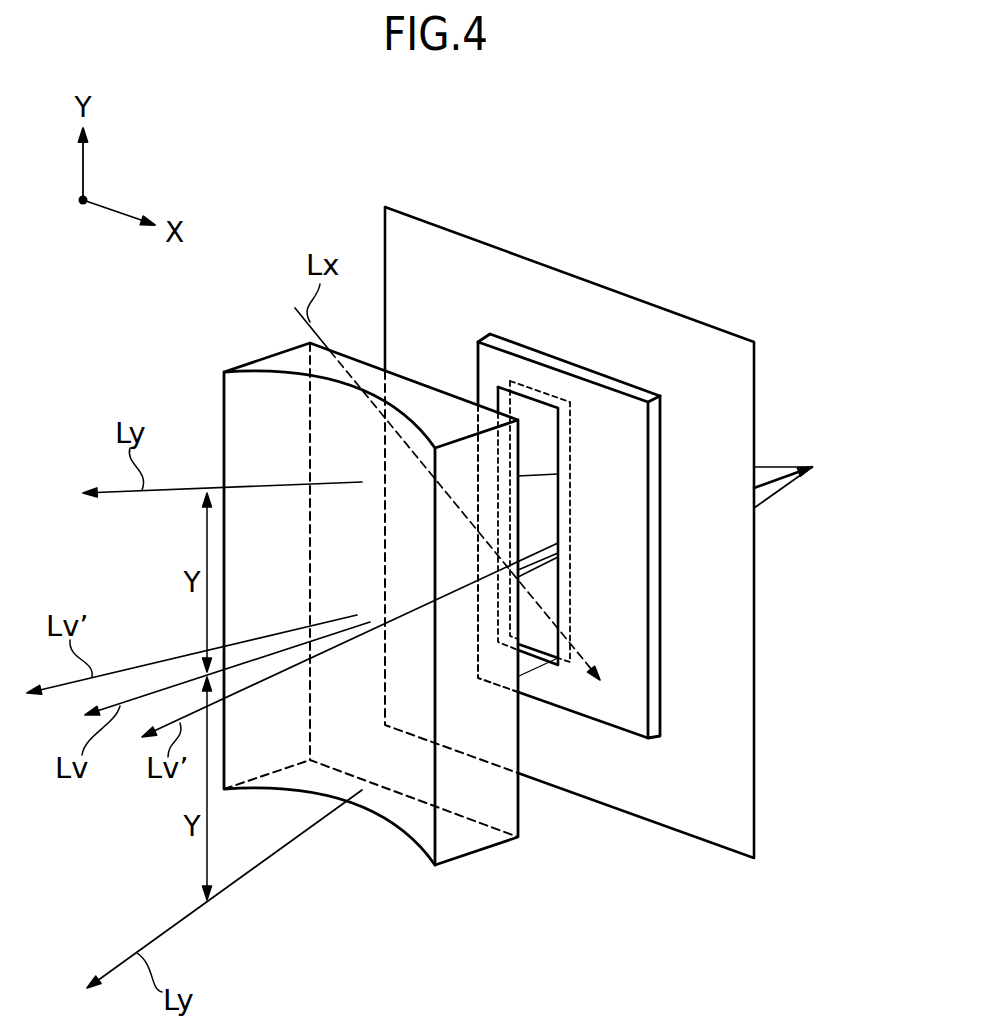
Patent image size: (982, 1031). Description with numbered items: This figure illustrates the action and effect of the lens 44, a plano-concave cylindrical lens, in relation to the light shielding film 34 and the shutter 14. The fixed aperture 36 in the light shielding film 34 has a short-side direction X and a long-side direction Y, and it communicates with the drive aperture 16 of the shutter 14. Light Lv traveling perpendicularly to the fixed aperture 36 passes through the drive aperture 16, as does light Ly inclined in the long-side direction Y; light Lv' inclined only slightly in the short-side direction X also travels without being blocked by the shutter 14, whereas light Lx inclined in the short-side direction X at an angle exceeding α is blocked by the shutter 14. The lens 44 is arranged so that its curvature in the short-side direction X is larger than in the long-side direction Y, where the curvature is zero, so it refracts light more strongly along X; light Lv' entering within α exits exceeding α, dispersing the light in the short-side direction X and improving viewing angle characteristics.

The shutter 14 is at (603, 380).
The drive aperture 16 is at (528, 413).
The light shielding film 34 is at (723, 772).
The fixed aperture 36 is at (568, 438).
The lens 44 is at (405, 833).